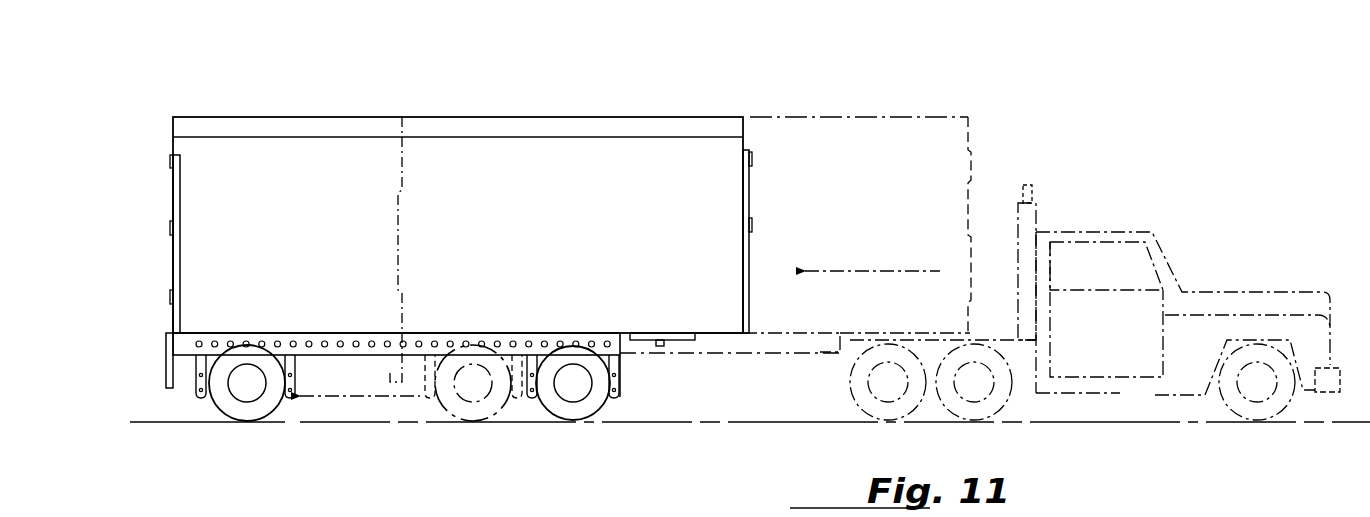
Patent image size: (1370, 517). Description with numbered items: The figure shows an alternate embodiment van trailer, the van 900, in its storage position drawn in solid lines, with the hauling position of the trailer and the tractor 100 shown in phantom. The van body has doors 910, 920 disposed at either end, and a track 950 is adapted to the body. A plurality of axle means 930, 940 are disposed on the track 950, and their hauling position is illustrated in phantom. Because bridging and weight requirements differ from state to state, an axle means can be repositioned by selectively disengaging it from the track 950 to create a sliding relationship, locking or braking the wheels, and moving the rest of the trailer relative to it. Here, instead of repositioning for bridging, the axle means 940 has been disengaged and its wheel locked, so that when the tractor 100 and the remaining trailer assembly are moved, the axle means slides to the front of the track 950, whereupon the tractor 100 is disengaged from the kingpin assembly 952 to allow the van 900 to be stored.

The tractor 100 is at (1200, 270).
The van 900 is at (226, 110).
The door 910 is at (173, 198).
The door 920 is at (743, 200).
The axle means 930 is at (245, 422).
The axle means 940 is at (569, 422).
The track 950 is at (352, 347).
The kingpin assembly 952 is at (660, 347).